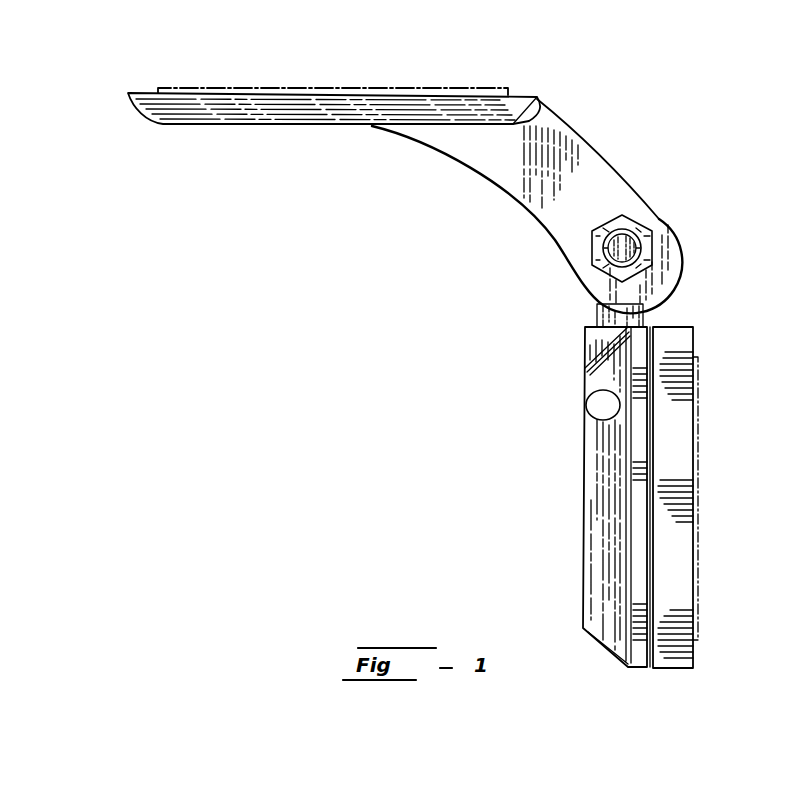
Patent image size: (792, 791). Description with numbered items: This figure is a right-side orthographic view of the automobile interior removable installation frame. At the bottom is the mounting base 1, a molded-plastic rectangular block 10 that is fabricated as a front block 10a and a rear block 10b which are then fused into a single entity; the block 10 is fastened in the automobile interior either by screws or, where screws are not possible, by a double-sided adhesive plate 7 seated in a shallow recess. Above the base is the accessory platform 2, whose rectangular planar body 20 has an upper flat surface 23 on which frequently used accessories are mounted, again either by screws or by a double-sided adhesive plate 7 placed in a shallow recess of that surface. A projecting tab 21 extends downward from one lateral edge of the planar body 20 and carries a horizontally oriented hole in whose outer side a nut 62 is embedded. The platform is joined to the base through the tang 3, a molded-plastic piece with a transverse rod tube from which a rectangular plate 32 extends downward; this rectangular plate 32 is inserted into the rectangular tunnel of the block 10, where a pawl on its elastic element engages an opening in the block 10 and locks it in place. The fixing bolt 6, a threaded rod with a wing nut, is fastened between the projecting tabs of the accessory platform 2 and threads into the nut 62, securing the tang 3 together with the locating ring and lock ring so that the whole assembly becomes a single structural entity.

The mounting base 1 is at (581, 482).
The accessory platform 2 is at (352, 138).
The tang 3 is at (650, 313).
The fixing bolt 6 is at (594, 269).
The double-sided adhesive plate 7 is at (494, 82).
The rectangular block 10 is at (582, 420).
The front block 10a is at (600, 533).
The rear block 10b is at (670, 582).
The rectangular planar body 20 is at (313, 113).
The projecting tab 21 is at (492, 158).
The flat surface 23 is at (522, 92).
The rectangular plate 32 is at (596, 312).
The nut 62 is at (658, 254).